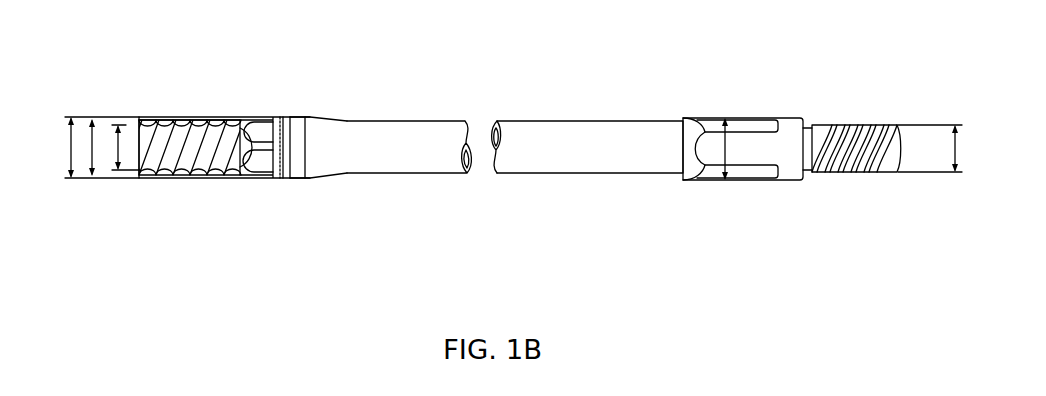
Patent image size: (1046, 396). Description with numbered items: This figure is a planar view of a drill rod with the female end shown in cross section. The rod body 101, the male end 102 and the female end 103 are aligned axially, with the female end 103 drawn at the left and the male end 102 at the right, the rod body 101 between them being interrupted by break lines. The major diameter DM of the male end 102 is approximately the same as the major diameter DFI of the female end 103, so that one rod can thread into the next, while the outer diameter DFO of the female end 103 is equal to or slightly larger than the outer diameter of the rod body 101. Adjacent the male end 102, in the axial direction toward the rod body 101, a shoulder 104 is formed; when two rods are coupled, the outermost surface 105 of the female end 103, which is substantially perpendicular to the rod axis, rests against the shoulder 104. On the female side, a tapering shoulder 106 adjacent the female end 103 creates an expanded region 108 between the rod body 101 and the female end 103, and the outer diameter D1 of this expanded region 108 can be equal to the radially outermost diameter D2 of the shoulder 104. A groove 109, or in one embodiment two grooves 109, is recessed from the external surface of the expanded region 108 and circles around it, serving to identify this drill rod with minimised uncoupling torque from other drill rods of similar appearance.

The rod body 101 is at (545, 120).
The male end 102 is at (880, 138).
The female end 103 is at (222, 130).
The shoulder 104 is at (808, 173).
The outermost surface 105 is at (140, 120).
The tapering shoulder 106 is at (272, 180).
The expanded region 108 is at (298, 165).
The groove 109 is at (308, 120).
The outer diameter of the expanded region D1 is at (90, 147).
The outer diameter of the female end DFO is at (97, 138).
The major diameter of the female end DFI is at (124, 147).
The radially outermost diameter of the shoulder D2 is at (727, 148).
The major diameter of the male end DM is at (930, 148).